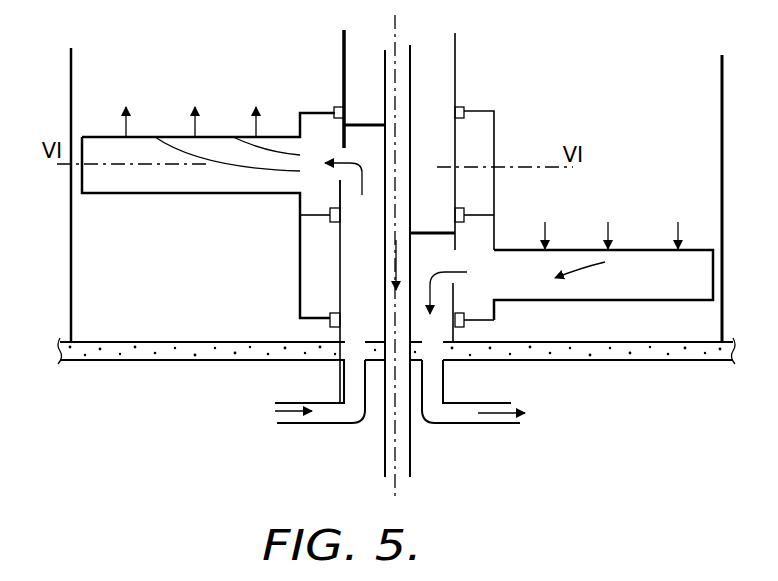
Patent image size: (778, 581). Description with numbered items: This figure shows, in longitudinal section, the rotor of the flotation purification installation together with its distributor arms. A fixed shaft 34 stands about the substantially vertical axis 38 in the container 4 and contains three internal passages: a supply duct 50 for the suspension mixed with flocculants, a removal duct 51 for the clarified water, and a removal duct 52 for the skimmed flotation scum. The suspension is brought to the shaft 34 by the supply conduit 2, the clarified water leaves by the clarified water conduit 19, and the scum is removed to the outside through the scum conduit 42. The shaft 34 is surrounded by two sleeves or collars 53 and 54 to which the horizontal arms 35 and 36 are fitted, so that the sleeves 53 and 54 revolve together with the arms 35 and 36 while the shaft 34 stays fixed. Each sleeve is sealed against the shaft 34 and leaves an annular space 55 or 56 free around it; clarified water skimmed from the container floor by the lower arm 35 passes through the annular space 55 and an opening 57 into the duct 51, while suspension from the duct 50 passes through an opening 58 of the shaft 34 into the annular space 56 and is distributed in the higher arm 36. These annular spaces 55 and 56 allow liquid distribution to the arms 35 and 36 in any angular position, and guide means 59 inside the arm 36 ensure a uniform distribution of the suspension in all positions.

The inlet pipe 2 is at (306, 425).
The housing wall 4 is at (70, 263).
The outlet pipe 19 is at (472, 427).
The outer pipe 34 is at (456, 82).
The duct 35 is at (647, 302).
The duct 36 is at (163, 195).
The inner pipe 38 is at (400, 95).
The central axis 42 is at (410, 456).
The lower plate 50 is at (345, 333).
The lower plate 51 is at (447, 338).
The partition plate 52 is at (385, 81).
The partition plate 53 is at (300, 258).
The partition plate 54 is at (496, 143).
The passage 55 is at (305, 290).
The gap 56 is at (496, 198).
The opening 57 is at (459, 307).
The opening 58 is at (337, 158).
The guide vanes 59 is at (248, 145).